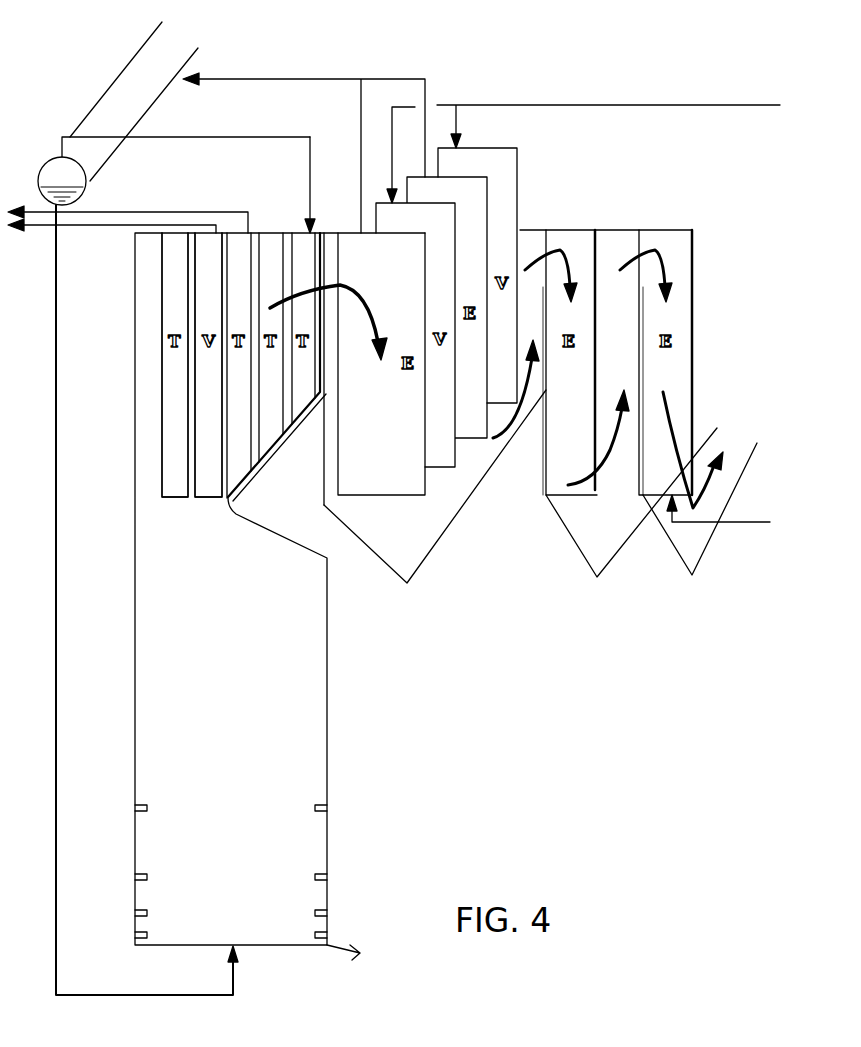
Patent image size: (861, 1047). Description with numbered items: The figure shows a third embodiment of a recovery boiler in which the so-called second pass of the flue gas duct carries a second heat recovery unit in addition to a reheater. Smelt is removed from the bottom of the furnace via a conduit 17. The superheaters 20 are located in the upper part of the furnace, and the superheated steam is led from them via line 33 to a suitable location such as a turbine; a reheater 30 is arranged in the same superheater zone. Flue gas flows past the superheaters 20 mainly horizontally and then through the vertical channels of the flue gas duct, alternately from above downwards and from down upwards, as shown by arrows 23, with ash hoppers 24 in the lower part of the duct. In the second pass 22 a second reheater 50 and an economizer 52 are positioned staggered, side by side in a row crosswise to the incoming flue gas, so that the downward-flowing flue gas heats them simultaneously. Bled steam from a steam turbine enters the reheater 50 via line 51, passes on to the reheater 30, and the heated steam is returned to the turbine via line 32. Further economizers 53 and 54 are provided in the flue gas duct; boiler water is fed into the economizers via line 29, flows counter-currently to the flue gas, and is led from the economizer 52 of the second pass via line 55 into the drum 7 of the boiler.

The drum 7 is at (88, 183).
The conduit 17 is at (338, 947).
The superheaters 20 is at (175, 490).
The second pass 22 is at (326, 439).
The arrows 23 is at (510, 428).
The ash hoppers 24 is at (408, 548).
The line 29 is at (750, 522).
The reheater 30 is at (210, 490).
The line 32 is at (92, 228).
The line 33 is at (217, 208).
The second reheater 50 is at (507, 168).
The line 51 is at (624, 106).
The economizer 52 is at (467, 210).
The economizer 53 is at (580, 235).
The economizer 54 is at (680, 248).
The line 55 is at (302, 77).